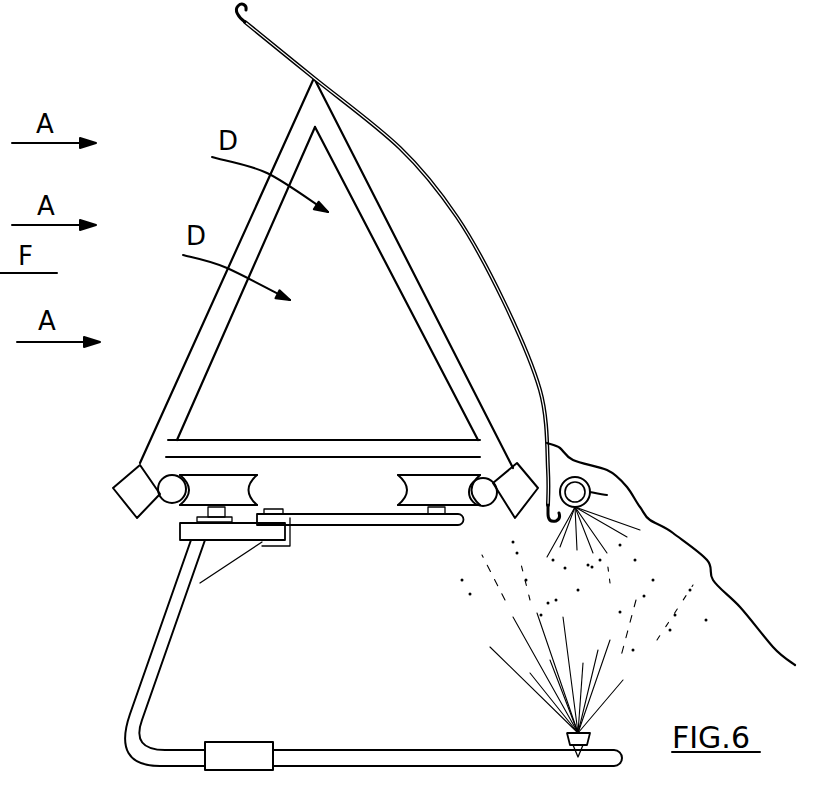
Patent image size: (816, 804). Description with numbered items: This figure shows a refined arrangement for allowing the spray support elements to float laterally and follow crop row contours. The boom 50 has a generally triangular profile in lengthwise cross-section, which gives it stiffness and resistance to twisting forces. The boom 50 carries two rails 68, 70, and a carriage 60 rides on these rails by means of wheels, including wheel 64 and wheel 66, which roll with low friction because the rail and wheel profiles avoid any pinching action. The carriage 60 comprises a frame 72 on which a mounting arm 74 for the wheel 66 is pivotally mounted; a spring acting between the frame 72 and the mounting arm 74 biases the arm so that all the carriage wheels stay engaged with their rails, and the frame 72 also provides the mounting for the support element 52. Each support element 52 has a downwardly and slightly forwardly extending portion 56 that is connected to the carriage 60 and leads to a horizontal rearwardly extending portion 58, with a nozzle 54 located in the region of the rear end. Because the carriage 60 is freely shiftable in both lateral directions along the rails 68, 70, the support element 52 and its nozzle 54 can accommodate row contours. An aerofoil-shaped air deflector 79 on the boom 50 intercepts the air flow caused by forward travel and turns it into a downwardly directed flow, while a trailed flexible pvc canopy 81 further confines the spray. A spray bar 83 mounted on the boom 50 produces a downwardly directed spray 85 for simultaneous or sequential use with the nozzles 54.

The boom 50 is at (412, 249).
The support element 52 is at (133, 750).
The nozzle 54 is at (563, 742).
The downwardly and slightly forwardly extending portion 56 is at (160, 647).
The horizontal rearwardly extending portion 58 is at (362, 748).
The carriage 60 is at (327, 532).
The wheel 64 is at (227, 475).
The wheel 66 is at (420, 475).
The rail 68 is at (158, 502).
The rail 70 is at (500, 475).
The frame 72 is at (237, 530).
The mounting arm 74 is at (373, 530).
The aerofoil-shaped air deflector 79 is at (497, 273).
The flexible pvc canopy 81 is at (715, 581).
The spray bar 83 is at (575, 462).
The downwardly directed spray 85 is at (607, 495).